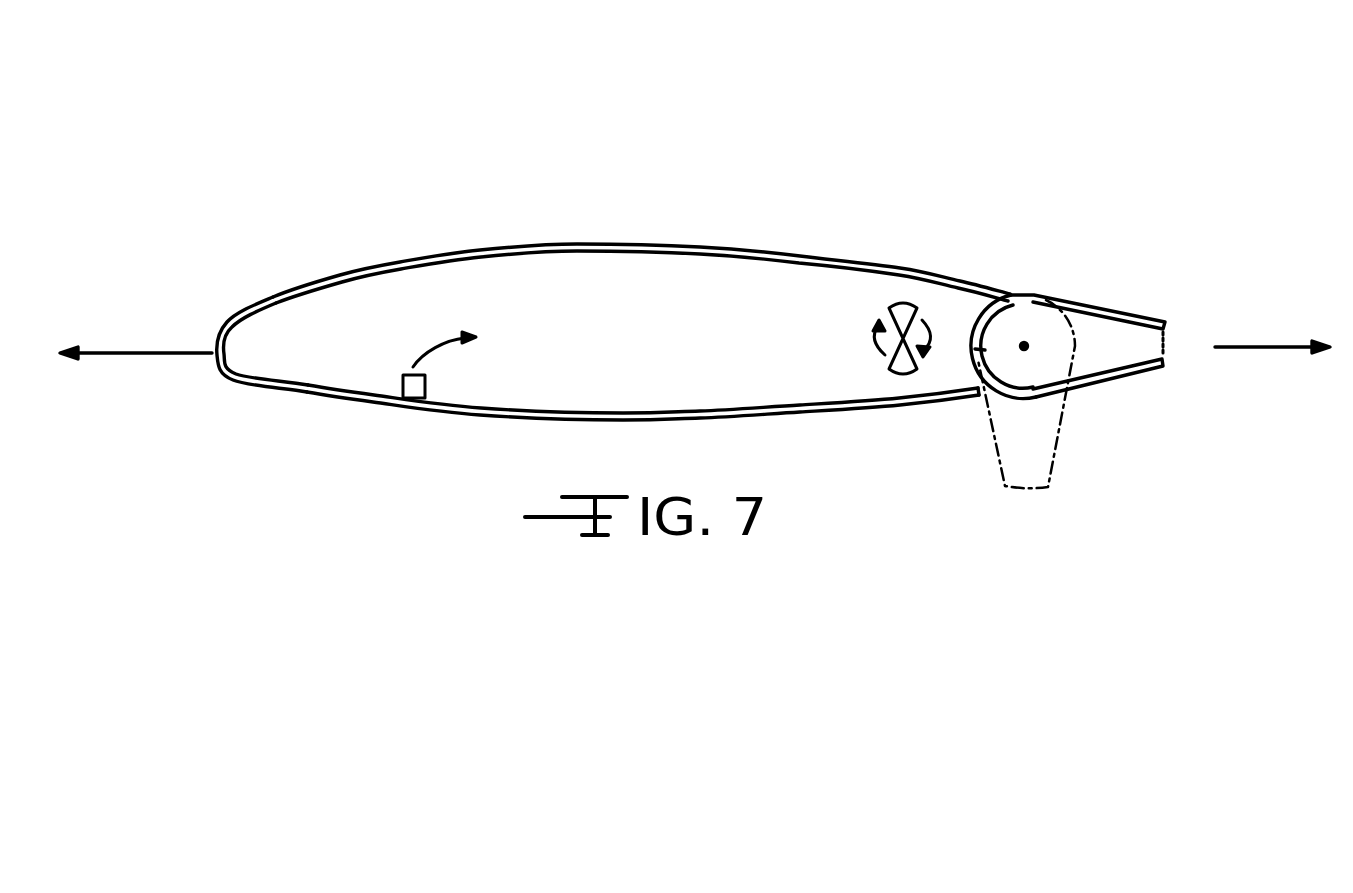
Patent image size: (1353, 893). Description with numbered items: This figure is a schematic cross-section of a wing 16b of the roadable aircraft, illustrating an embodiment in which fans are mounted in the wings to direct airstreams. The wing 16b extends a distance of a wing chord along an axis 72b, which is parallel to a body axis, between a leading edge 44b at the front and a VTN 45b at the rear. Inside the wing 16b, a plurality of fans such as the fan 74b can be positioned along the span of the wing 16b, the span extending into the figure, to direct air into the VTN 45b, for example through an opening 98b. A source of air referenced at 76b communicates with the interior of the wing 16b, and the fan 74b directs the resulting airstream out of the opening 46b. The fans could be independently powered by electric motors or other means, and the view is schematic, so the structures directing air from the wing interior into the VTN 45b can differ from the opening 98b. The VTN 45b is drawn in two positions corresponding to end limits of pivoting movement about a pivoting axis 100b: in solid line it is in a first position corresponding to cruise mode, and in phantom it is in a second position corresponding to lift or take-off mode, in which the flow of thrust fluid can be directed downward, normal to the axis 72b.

The wing 16b is at (669, 168).
The leading edge 44b is at (242, 318).
The VTN 45b is at (1120, 282).
The opening 46b is at (1165, 347).
The axis 72b is at (140, 353).
The fan 74b is at (892, 280).
The source of air 76b is at (403, 386).
The opening 98b is at (977, 366).
The pivoting axis 100b is at (1024, 343).